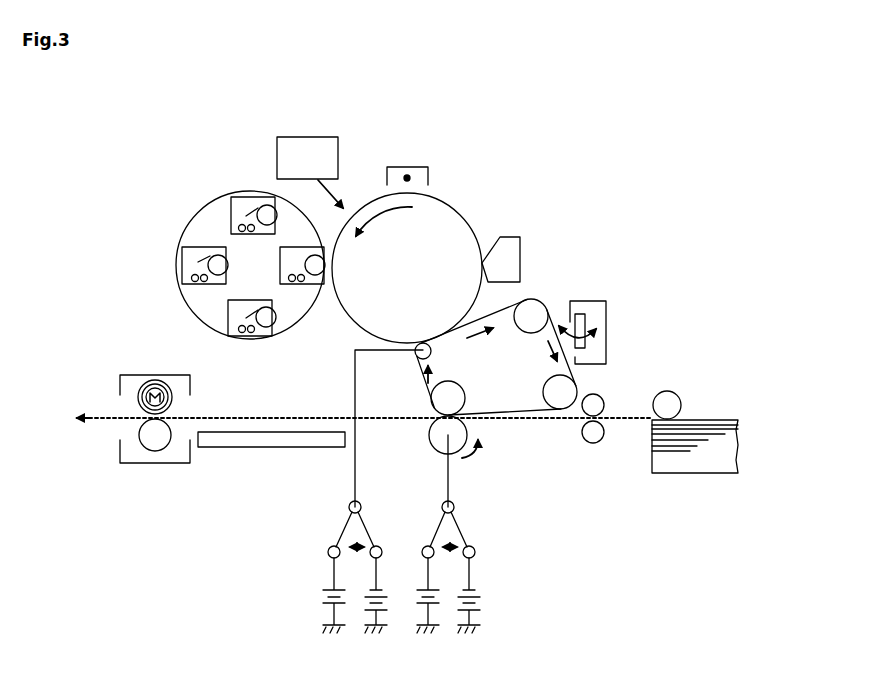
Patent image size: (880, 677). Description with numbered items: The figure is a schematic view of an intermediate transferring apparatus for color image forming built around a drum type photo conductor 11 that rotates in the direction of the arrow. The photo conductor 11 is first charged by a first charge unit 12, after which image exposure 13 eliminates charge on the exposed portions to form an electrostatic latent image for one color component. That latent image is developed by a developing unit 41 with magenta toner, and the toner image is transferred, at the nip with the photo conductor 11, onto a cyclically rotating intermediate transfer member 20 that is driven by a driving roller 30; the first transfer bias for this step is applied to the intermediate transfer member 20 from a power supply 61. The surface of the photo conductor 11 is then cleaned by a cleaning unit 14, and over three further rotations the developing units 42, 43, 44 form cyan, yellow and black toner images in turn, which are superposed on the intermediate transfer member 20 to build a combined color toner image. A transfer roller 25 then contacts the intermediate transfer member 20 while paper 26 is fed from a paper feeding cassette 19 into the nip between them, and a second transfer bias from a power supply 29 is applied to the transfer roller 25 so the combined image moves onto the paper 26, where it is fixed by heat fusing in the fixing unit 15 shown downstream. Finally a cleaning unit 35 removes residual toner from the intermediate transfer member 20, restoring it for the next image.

The photo conductor 11 is at (462, 212).
The first charge unit 12 is at (409, 166).
The image exposure 13 is at (342, 195).
The cleaning unit 14 is at (513, 236).
The fixing device 15 is at (140, 375).
The paper feeding cassette 19 is at (692, 474).
The intermediate transfer member 20 is at (523, 300).
The transfer roller 25 is at (438, 455).
The paper 26 is at (704, 420).
The power supply 29 is at (488, 605).
The driving roller 30 is at (537, 312).
The cleaning unit 35 is at (606, 328).
The developing unit 41 is at (318, 285).
The developing unit 42 is at (243, 198).
The developing unit 43 is at (183, 262).
The developing unit 44 is at (270, 336).
The power supply 61 is at (320, 603).